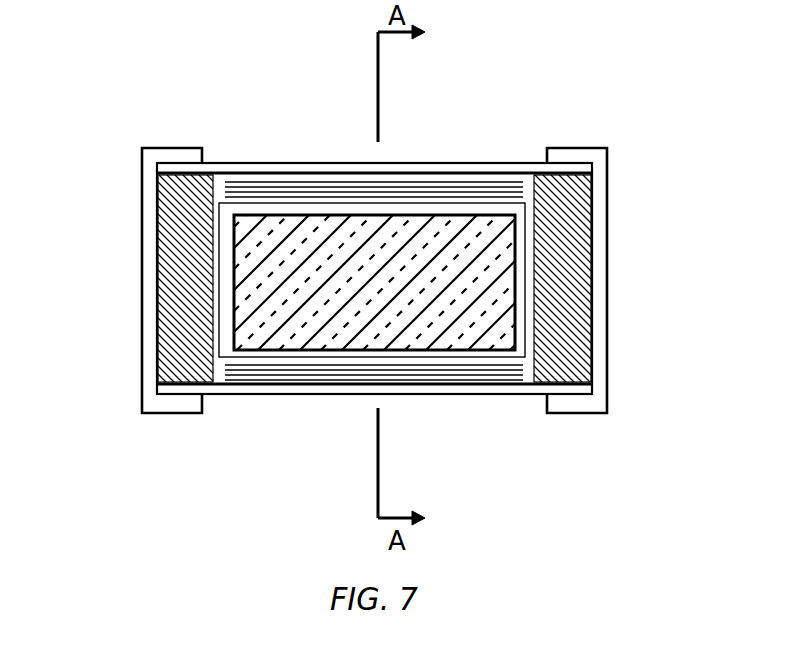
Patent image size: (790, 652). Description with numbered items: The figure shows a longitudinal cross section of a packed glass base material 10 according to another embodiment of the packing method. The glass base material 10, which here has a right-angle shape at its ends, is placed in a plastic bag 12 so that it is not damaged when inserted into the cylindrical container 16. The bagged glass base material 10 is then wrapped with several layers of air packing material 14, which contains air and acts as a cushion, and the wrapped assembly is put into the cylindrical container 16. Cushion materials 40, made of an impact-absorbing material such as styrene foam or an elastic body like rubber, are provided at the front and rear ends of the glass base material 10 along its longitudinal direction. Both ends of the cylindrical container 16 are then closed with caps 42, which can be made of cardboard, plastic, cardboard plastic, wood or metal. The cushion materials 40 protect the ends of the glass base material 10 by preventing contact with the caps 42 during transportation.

The glass base material 10 is at (374, 214).
The plastic bag 12 is at (372, 225).
The air packing material 14 is at (391, 244).
The cylindrical container 16 is at (374, 244).
The cushion materials 40 is at (409, 222).
The caps 42 is at (372, 280).